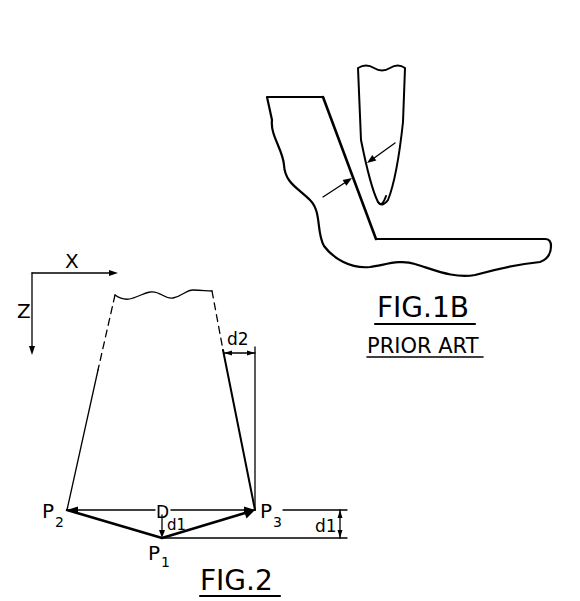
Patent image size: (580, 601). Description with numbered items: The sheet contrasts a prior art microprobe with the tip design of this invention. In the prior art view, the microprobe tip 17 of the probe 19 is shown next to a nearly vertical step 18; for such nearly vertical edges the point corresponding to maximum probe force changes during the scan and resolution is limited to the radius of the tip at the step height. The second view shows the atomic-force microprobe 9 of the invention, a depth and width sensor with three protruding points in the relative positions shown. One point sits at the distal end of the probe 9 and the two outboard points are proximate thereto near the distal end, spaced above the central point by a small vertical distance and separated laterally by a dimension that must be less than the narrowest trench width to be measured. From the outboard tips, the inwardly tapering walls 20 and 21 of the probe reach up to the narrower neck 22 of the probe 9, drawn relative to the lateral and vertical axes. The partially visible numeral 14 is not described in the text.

In FIG. 1B, the microprobe tip 17 is at (385, 203).
In FIG. 1B, the nearly vertical step 18 is at (335, 91).
In FIG. 1B, the probe 19 is at (406, 80).
In FIG. 2, the atomic-force microprobe 9 is at (170, 379).
In FIG. 2, the inwardly tapering wall 20 is at (98, 368).
In FIG. 2, the inwardly tapering wall 21 is at (235, 410).
In FIG. 2, the narrower neck 22 is at (221, 281).
In FIG. 2, the substrate 14 is at (80, 597).